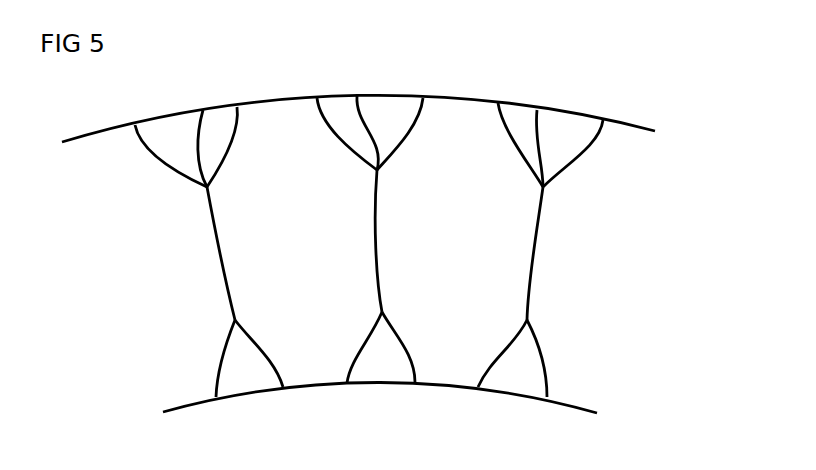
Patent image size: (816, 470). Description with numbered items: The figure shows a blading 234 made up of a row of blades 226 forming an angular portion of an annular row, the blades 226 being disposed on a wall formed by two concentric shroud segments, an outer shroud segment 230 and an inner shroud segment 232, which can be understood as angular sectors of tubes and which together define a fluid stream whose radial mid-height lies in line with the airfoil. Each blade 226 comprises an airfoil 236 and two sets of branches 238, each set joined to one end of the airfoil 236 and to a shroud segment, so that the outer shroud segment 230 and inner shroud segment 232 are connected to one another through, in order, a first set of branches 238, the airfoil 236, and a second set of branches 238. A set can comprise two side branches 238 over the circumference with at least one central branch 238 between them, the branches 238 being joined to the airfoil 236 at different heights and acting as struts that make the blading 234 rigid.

The blade 226 is at (373, 215).
The outer shroud segment 230 is at (470, 98).
The inner shroud segment 232 is at (438, 387).
The blading 234 is at (687, 238).
The airfoil 236 is at (227, 275).
The branch 238 is at (165, 162).